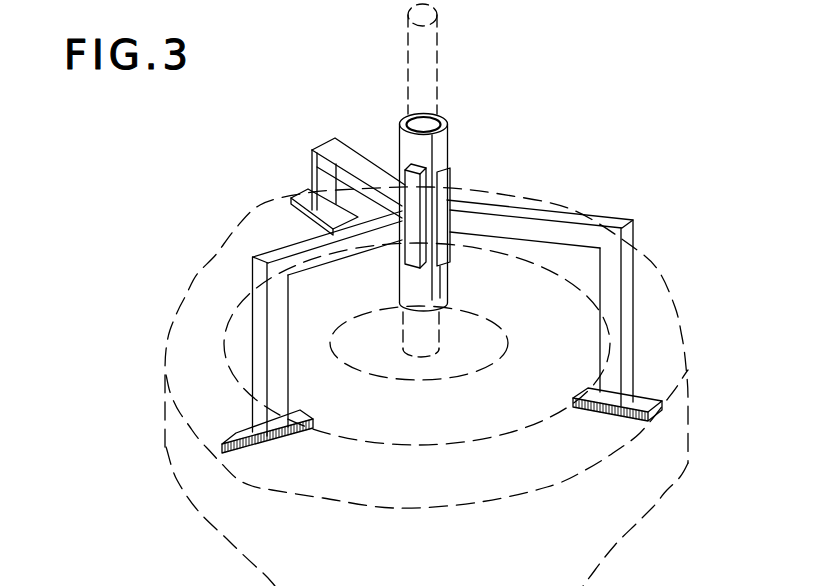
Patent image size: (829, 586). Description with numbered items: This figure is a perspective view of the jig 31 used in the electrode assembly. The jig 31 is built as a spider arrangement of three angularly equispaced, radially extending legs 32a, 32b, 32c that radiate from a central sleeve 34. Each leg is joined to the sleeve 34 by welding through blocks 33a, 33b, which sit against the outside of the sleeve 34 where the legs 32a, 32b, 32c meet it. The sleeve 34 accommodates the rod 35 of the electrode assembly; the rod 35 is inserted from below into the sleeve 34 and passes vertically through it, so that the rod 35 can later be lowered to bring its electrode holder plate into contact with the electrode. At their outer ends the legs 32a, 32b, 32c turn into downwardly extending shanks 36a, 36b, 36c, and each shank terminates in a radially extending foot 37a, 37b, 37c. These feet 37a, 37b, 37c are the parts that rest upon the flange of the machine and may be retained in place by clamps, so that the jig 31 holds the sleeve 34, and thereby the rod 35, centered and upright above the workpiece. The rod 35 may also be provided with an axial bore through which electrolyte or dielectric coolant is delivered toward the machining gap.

The jig 31 is at (460, 193).
The leg 32a is at (329, 256).
The leg 32b is at (577, 217).
The leg 32c is at (346, 152).
The block 33a is at (411, 263).
The block 33b is at (447, 256).
The sleeve 34 is at (432, 152).
The rod 35 is at (430, 50).
The shank 36a is at (260, 350).
The shank 36b is at (630, 335).
The shank 36c is at (323, 182).
The foot 37a is at (247, 443).
The foot 37b is at (656, 400).
The foot 37c is at (318, 218).